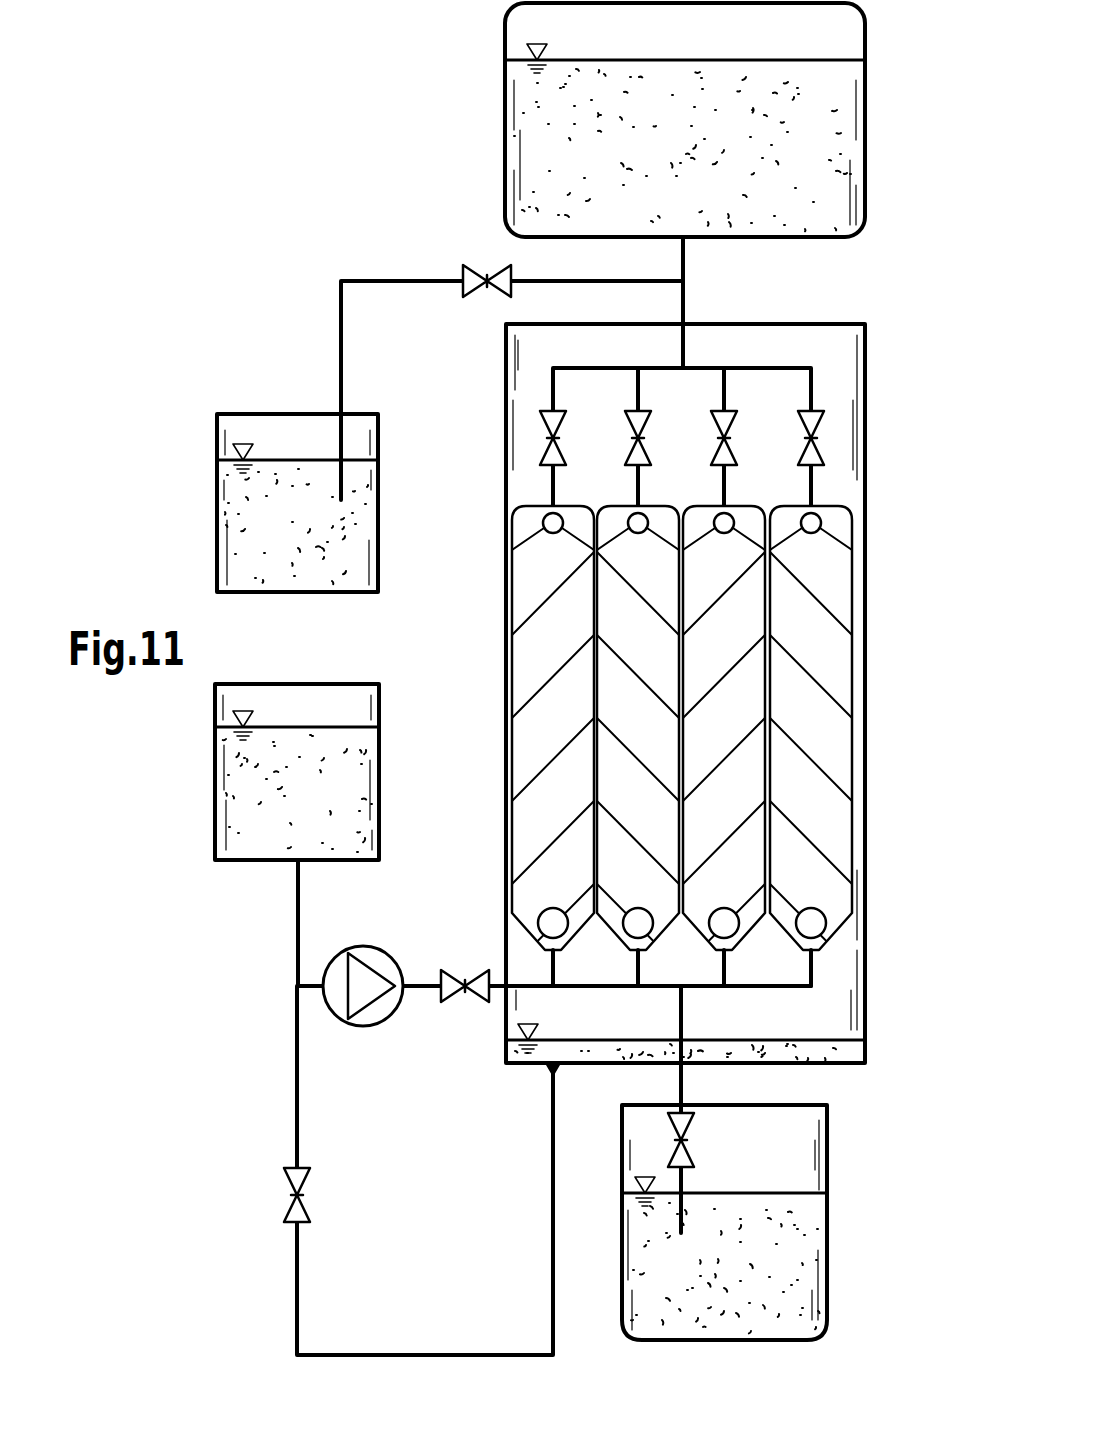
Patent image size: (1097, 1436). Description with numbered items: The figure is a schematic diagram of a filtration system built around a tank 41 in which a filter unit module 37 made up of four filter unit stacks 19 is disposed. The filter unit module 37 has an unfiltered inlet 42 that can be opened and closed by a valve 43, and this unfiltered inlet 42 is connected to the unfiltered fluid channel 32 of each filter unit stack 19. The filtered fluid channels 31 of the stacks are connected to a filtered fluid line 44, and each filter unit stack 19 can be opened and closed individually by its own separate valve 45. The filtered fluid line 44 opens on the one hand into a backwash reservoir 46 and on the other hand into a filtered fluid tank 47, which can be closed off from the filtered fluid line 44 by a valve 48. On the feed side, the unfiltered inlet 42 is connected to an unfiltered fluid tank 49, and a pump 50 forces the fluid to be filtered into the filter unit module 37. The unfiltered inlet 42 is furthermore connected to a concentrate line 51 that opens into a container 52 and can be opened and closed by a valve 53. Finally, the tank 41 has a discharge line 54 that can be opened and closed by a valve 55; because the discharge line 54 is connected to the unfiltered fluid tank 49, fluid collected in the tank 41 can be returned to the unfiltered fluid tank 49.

The filter unit stack 19 is at (541, 613).
The filtered fluid channel 31 is at (543, 523).
The unfiltered fluid channel 32 is at (538, 923).
The filter unit module 37 is at (873, 634).
The tank 41 is at (867, 953).
The unfiltered inlet 42 is at (495, 1003).
The valve 43 is at (463, 1003).
The filtered fluid line 44 is at (686, 298).
The valve 45 is at (548, 420).
The backwash reservoir 46 is at (530, 101).
The filtered fluid tank 47 is at (242, 497).
The valve 48 is at (485, 268).
The unfiltered fluid tank 49 is at (245, 786).
The pump 50 is at (368, 1028).
The concentrate line 51 is at (684, 1080).
The container 52 is at (805, 1243).
The valve 53 is at (668, 1122).
The discharge line 54 is at (556, 1203).
The valve 55 is at (291, 1180).